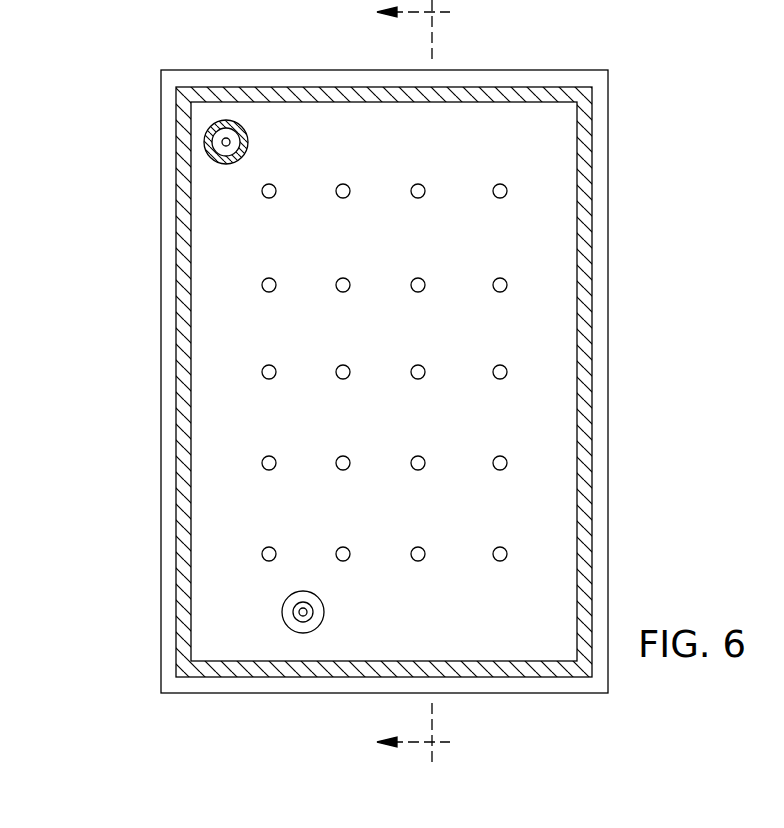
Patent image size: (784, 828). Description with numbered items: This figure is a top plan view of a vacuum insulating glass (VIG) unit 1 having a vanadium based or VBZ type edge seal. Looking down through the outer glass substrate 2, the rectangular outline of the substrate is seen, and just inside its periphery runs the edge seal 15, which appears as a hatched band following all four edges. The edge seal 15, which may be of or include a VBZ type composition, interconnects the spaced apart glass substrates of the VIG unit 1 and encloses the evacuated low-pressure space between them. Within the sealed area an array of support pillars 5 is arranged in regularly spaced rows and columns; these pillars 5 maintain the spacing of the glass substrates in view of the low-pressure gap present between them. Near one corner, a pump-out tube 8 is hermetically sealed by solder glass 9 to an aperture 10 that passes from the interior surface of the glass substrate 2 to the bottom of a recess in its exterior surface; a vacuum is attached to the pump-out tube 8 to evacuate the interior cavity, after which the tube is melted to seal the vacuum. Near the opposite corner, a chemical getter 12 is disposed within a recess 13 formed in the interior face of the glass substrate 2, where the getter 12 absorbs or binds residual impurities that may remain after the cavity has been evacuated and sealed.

The VIG unit 1 is at (150, 579).
The glass substrate 2 is at (377, 78).
The support pillars 5 is at (507, 284).
The pump-out tube 8 is at (206, 135).
The solder glass 9 is at (225, 157).
The aperture 10 is at (222, 142).
The chemical getter 12 is at (298, 617).
The recess 13 is at (325, 611).
The edge seal 15 is at (293, 93).